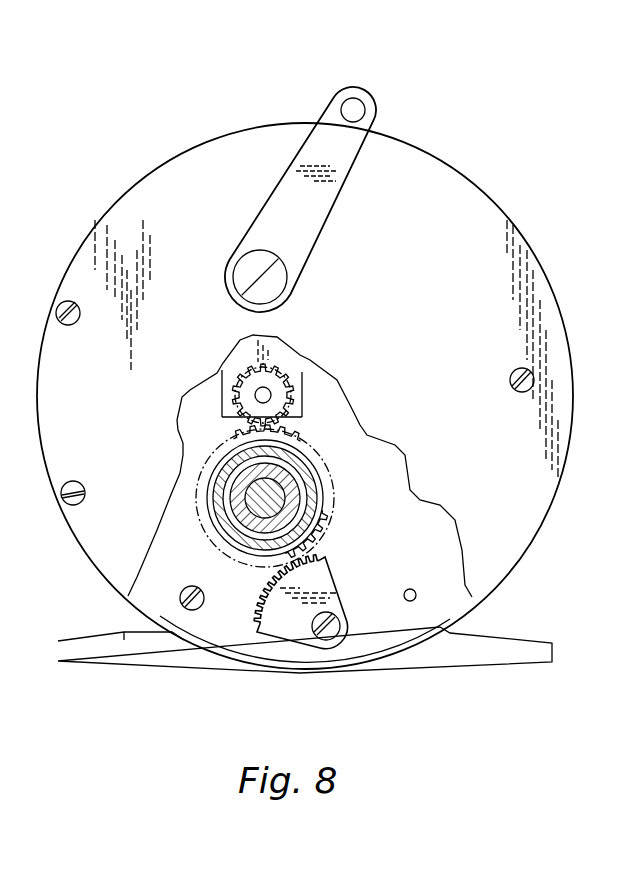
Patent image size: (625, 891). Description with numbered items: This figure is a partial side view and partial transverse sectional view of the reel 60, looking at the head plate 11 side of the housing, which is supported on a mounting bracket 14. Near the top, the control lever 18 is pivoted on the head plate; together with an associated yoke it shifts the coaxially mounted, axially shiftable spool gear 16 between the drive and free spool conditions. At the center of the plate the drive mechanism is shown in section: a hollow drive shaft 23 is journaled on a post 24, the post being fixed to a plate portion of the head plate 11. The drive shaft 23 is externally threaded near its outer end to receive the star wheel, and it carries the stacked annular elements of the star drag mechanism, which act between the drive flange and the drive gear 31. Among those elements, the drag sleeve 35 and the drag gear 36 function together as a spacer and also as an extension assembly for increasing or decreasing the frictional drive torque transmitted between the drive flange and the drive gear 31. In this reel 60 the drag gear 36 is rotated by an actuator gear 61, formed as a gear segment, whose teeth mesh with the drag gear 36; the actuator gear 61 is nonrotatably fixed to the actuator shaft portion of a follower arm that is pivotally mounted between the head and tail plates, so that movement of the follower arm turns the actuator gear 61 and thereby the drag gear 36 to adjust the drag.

The head plate 11 is at (413, 251).
The mounting bracket 14 is at (477, 656).
The spool gear 16 is at (291, 396).
The control lever 18 is at (332, 100).
The drive shaft 23 is at (243, 525).
The post 24 is at (278, 490).
The drive gear 31 is at (284, 427).
The drag sleeve 35 is at (222, 480).
The drag gear 36 is at (318, 541).
The reel 60 is at (443, 146).
The actuator gear 61 is at (327, 580).